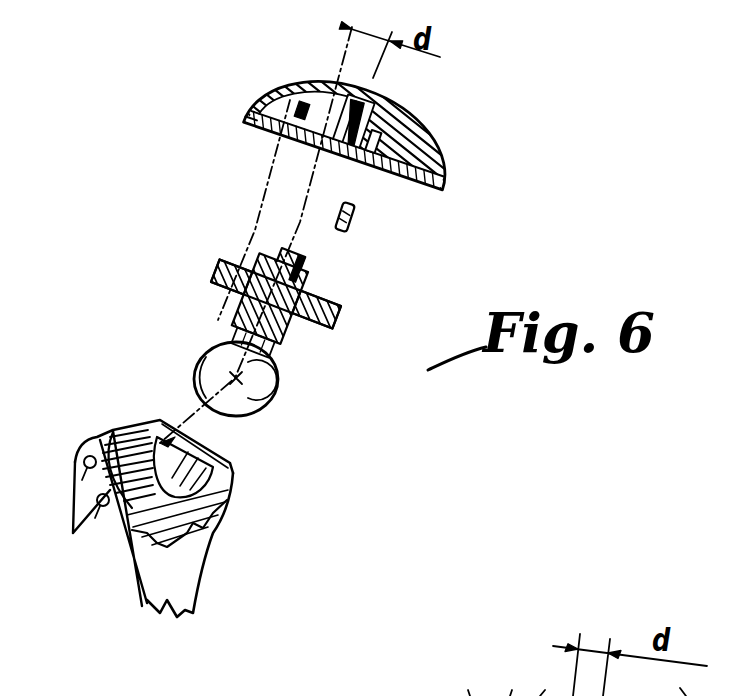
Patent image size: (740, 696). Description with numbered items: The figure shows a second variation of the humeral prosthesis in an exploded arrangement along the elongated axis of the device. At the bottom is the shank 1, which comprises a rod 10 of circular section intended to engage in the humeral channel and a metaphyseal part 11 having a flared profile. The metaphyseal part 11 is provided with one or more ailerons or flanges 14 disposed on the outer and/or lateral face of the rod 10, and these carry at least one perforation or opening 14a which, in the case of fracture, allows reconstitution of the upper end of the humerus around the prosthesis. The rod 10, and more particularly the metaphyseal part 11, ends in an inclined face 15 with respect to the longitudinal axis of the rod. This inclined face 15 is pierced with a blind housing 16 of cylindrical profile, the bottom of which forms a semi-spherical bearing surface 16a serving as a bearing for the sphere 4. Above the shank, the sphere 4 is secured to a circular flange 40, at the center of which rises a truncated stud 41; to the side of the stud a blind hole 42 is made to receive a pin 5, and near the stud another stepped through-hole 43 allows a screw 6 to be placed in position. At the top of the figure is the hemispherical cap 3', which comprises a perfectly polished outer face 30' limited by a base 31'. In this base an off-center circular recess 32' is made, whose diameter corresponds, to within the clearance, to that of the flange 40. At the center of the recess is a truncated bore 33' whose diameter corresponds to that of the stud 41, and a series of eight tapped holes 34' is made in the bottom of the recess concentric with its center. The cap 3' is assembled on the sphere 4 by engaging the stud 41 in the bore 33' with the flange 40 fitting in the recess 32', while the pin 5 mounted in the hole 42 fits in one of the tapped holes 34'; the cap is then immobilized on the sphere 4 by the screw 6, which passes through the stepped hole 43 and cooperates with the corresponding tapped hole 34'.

The shank 1 is at (195, 505).
The hemispherical cap 3' is at (370, 241).
The sphere 4 is at (278, 400).
The pin 5 is at (388, 249).
The screw 6 is at (256, 237).
The rod 10 is at (150, 584).
The metaphyseal part 11 is at (244, 518).
The aileron or flange 14 is at (88, 531).
The perforation or opening 14a is at (70, 518).
The inclined face 15 is at (256, 472).
The blind housing 16 is at (144, 411).
The semi-spherical bearing surface 16a is at (105, 435).
The outer face 30' is at (370, 188).
The base 31' is at (426, 189).
The circular recess 32' is at (206, 152).
The truncated bore 33' is at (290, 75).
The tapped holes 34' is at (409, 209).
The circular flange 40 is at (253, 293).
The truncated stud 41 is at (288, 265).
The blind hole 42 is at (316, 310).
The stepped through-hole 43 is at (231, 277).